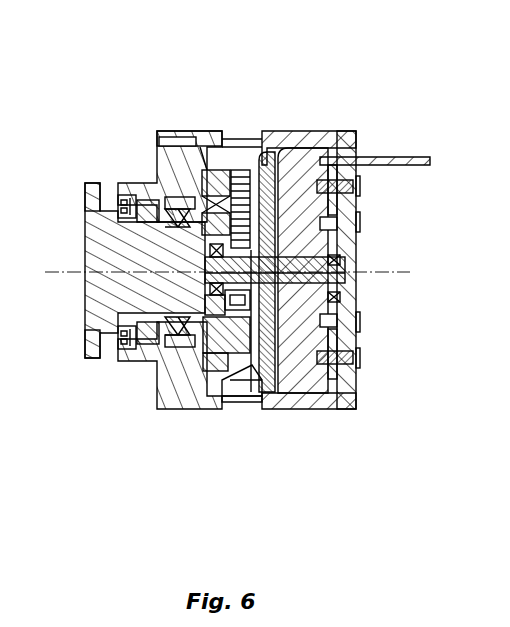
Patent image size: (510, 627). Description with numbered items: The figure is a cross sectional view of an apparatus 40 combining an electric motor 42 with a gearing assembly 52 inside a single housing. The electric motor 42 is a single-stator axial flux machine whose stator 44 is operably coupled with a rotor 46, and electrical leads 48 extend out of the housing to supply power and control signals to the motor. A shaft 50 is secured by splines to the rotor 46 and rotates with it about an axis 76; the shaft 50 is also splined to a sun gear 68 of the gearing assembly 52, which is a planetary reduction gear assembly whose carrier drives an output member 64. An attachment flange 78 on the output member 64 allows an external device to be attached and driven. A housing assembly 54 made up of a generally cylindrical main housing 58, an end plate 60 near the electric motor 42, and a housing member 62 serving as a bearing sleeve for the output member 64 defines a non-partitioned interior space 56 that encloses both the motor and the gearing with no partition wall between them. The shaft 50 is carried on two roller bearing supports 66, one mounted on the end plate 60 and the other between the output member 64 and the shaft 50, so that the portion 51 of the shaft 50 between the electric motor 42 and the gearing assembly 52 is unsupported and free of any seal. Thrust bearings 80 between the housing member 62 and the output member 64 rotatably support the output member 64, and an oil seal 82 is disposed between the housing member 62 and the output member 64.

The apparatus 40 is at (143, 70).
The electric motor 42 is at (323, 382).
The stator 44 is at (298, 382).
The rotor 46 is at (267, 394).
The electrical leads 48 is at (382, 158).
The shaft 50 is at (338, 274).
The portion of shaft 51 is at (241, 248).
The gearing assembly 52 is at (213, 150).
The housing assembly 54 is at (231, 170).
The non-partitioned interior space 56 is at (258, 394).
The main housing 58 is at (303, 150).
The end plate 60 is at (357, 320).
The housing member 62 is at (165, 170).
The output member 64 is at (105, 313).
The bearing supports 66 is at (208, 281).
The sun gear 68 is at (86, 246).
The axis 76 is at (383, 269).
The attachment flange 78 is at (85, 202).
The thrust bearings 80 is at (138, 202).
The oil seal 82 is at (118, 200).